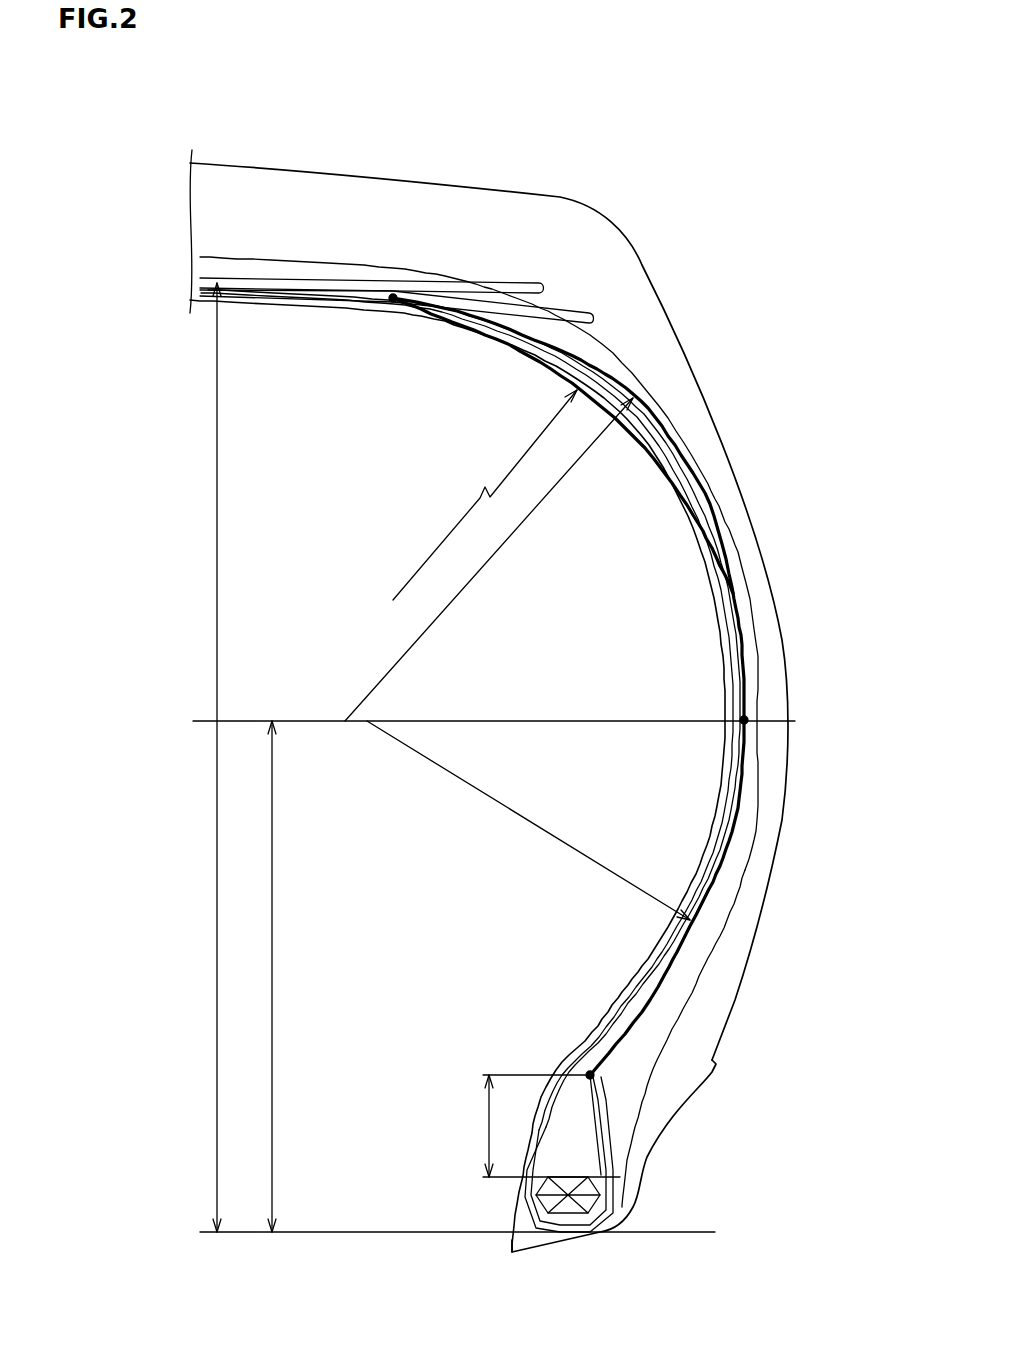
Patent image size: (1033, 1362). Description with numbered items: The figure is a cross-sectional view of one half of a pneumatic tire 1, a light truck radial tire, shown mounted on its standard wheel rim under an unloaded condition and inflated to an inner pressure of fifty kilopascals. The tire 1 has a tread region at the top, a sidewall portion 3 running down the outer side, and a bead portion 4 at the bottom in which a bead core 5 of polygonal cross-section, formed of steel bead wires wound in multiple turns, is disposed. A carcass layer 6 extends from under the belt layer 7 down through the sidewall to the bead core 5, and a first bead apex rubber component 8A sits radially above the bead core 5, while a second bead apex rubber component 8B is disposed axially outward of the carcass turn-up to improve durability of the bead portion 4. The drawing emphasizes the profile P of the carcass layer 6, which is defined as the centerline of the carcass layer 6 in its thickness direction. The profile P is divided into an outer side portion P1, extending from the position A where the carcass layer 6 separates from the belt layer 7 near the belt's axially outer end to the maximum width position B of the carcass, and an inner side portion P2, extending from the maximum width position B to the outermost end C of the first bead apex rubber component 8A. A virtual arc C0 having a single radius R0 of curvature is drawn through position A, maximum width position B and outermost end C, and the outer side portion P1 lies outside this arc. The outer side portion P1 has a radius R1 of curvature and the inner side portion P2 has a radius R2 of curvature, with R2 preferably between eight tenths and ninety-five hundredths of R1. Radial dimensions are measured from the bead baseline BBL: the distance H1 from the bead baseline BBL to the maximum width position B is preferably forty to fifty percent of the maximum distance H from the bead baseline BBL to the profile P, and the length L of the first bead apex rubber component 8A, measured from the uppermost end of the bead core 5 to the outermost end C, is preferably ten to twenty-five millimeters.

The pneumatic tire 1 is at (542, 157).
The sidewall portion 3 is at (745, 540).
The bead portion 4 is at (667, 1080).
The bead core 5 is at (588, 1185).
The carcass layer 6 is at (747, 657).
The belt layer 7 is at (373, 280).
The first bead apex rubber component 8A is at (570, 1140).
The second bead apex rubber component 8B is at (667, 1010).
The position where the carcass layer separates from the belt layer A is at (393, 302).
The maximum width position B is at (744, 720).
The outermost end of the first bead apex rubber component C is at (590, 1075).
The virtual arc C0 is at (652, 468).
The profile of the carcass layer P is at (733, 593).
The outer side portion P1 is at (678, 450).
The inner side portion P2 is at (657, 977).
The radius of curvature of the virtual arc R0 is at (485, 495).
The radius of curvature of the outer side portion R1 is at (489, 559).
The radius of curvature of the inner side portion R2 is at (528, 820).
The maximum distance from the bead baseline to the profile H is at (203, 757).
The distance from the bead baseline to the maximum width position H1 is at (494, 976).
The length of the first bead apex rubber component L is at (542, 1126).
The bead baseline BBL is at (663, 1232).